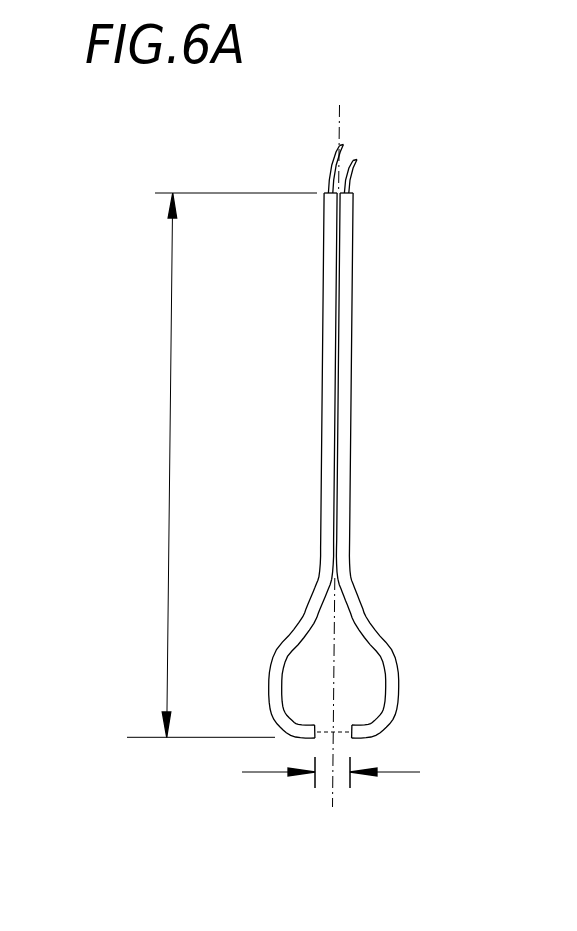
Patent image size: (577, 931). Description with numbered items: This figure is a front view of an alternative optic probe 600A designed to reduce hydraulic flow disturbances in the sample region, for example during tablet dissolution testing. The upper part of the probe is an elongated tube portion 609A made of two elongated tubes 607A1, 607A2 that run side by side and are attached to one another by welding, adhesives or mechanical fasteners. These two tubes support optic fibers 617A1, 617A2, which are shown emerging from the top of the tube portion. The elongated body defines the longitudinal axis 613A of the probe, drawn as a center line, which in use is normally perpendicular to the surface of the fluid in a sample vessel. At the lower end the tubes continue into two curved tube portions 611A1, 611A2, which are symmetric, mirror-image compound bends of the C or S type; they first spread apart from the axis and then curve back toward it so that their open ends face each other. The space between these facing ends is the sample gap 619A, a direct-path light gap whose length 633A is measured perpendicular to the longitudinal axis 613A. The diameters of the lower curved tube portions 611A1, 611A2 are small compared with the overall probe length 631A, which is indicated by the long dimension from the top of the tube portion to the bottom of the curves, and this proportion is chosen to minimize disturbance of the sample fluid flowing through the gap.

The probe 600A is at (400, 118).
The elongated tube portion 609A is at (390, 318).
The elongated tube 607A1 is at (321, 393).
The elongated tube 607A2 is at (352, 413).
The curved tube portion 611A1 is at (280, 655).
The curved tube portion 611A2 is at (385, 653).
The optic fiber 617A1 is at (330, 172).
The optic fiber 617A2 is at (357, 172).
The sample gap 619A is at (340, 732).
The probe length 631A is at (222, 465).
The length of sample gap 633A is at (326, 775).
The longitudinal axis 613A is at (332, 797).